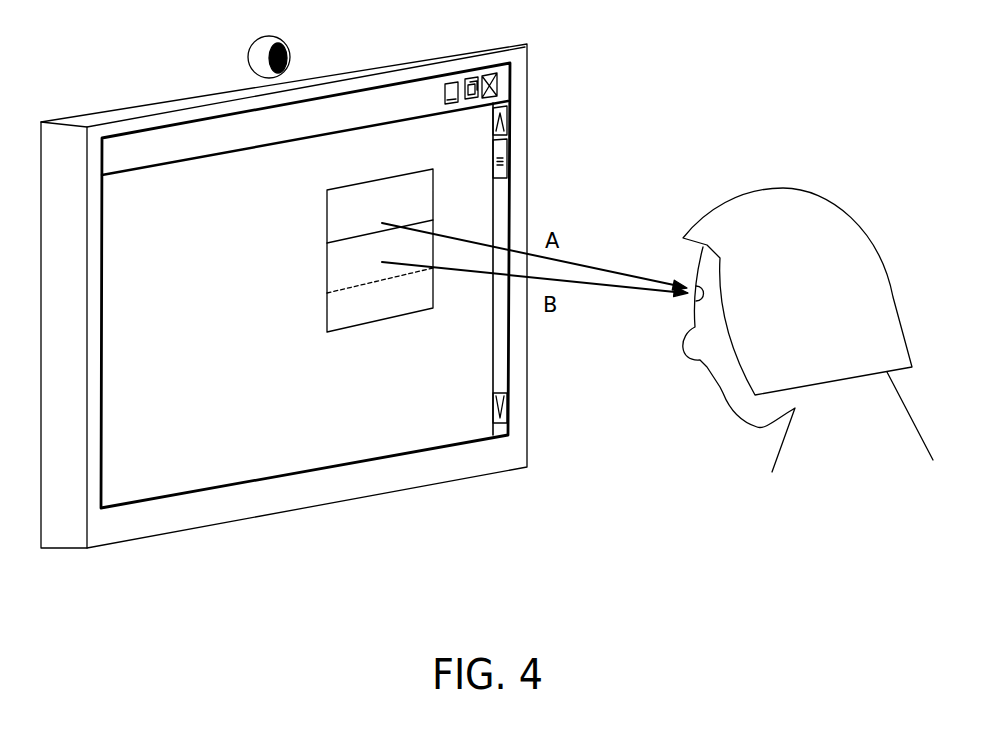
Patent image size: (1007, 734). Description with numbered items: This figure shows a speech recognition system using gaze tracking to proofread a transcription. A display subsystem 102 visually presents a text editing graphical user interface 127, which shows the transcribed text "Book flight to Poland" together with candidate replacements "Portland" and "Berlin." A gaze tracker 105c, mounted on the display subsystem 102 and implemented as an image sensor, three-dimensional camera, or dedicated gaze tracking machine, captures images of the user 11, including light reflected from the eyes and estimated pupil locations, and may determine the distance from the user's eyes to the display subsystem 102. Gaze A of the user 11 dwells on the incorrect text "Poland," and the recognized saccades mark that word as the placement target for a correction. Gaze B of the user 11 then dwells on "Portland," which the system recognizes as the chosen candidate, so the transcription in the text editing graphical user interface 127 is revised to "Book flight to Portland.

The display subsystem 102 is at (104, 581).
The gaze tracker 105c is at (292, 46).
The text editing graphical user interface 127 is at (229, 406).
The user 11 is at (778, 156).